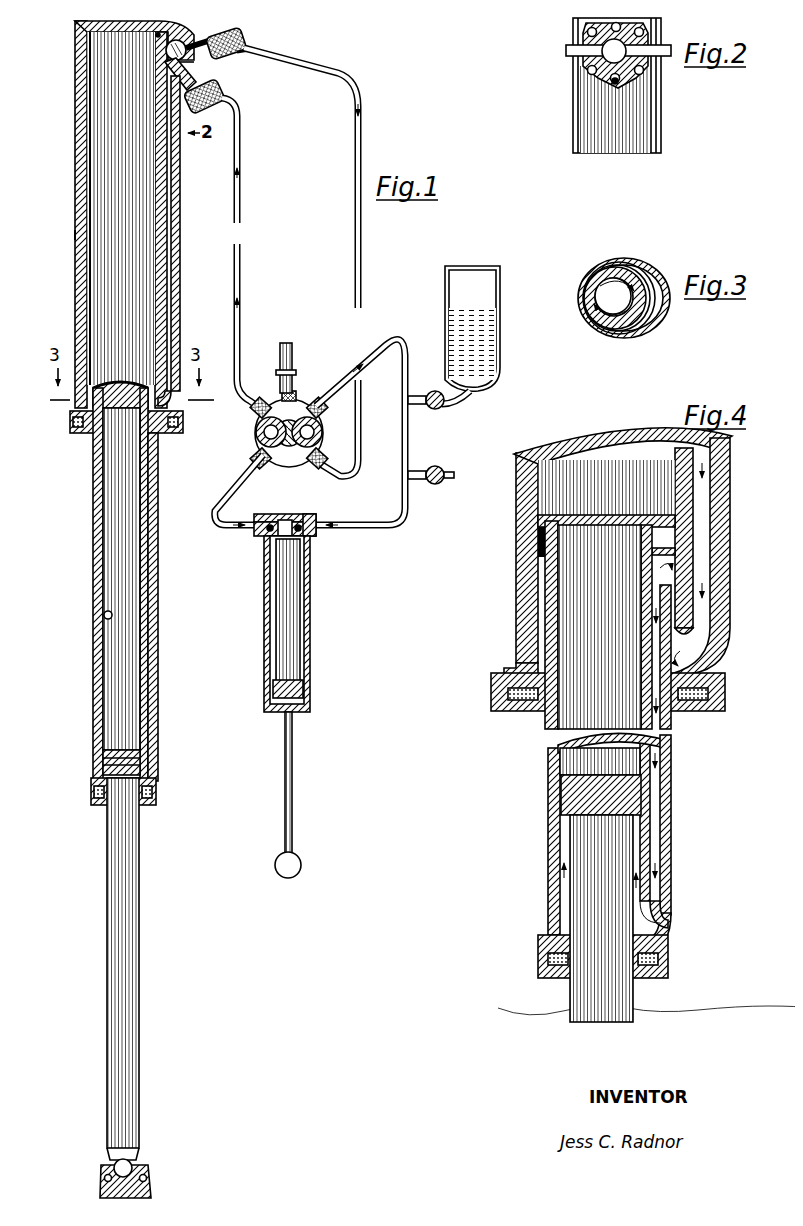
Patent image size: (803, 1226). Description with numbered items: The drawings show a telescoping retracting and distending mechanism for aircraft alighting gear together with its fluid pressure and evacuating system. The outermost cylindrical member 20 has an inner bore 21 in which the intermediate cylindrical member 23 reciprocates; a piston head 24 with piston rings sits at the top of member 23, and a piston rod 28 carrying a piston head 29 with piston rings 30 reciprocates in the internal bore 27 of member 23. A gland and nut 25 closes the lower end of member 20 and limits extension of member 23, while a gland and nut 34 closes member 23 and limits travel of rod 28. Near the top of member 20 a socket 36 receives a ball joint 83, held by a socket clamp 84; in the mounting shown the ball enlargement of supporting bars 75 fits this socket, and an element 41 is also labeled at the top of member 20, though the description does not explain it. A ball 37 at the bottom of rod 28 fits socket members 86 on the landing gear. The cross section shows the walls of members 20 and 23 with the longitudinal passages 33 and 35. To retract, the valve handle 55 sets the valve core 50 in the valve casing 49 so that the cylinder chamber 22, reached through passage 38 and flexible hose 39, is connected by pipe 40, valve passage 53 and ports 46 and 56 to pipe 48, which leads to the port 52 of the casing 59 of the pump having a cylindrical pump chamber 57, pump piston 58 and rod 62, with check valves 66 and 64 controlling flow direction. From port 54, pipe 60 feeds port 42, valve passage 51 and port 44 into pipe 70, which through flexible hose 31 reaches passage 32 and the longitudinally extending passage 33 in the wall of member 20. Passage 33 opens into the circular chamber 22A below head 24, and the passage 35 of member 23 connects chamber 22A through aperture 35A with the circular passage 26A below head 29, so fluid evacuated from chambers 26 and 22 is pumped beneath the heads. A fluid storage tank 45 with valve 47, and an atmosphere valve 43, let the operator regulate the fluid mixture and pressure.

In FIG. 1, the outermost cylindrical member 20 is at (74, 181).
In FIG. 2, the outermost cylindrical member 20 is at (638, 125).
In FIG. 3, the outermost cylindrical member 20 is at (592, 322).
In FIG. 4, the outermost cylindrical member 20 is at (520, 579).
In FIG. 1, the inner bore 21 is at (79, 220).
In FIG. 1, the cylinder chamber 22 is at (112, 136).
In FIG. 4, the circular chamber 22A is at (676, 640).
In FIG. 1, the intermediate cylindrical member 23 is at (88, 491).
In FIG. 3, the intermediate cylindrical member 23 is at (582, 303).
In FIG. 4, the intermediate cylindrical member 23 is at (545, 623).
In FIG. 1, the piston head 24 is at (105, 376).
In FIG. 4, the piston head 24 is at (578, 503).
In FIG. 1, the gland and nut 25 is at (66, 420).
In FIG. 4, the gland and nut 25 is at (697, 702).
In FIG. 1, the cylinder chamber 26 is at (120, 546).
In FIG. 3, the cylinder chamber 26 is at (600, 285).
In FIG. 4, the cylinder chamber 26 is at (590, 699).
In FIG. 4, the circular passage 26A is at (640, 916).
In FIG. 1, the internal bore 27 is at (97, 605).
In FIG. 1, the piston rod 28 is at (114, 870).
In FIG. 4, the piston rod 28 is at (566, 978).
In FIG. 1, the piston head 29 is at (100, 745).
In FIG. 4, the piston head 29 is at (575, 750).
In FIG. 4, the piston rings 30 is at (555, 791).
In FIG. 1, the flexible hose 31 is at (214, 86).
In FIG. 1, the passage 32 is at (182, 86).
In FIG. 2, the passage 32 is at (615, 72).
In FIG. 1, the longitudinally extending passage 33 is at (165, 188).
In FIG. 3, the longitudinally extending passage 33 is at (646, 302).
In FIG. 4, the longitudinally extending passage 33 is at (688, 504).
In FIG. 1, the gland and nut 34 is at (90, 797).
In FIG. 4, the gland and nut 34 is at (658, 967).
In FIG. 1, the longitudinally extending passage 35 is at (142, 490).
In FIG. 3, the longitudinally extending passage 35 is at (626, 310).
In FIG. 4, the longitudinally extending passage 35 is at (652, 738).
In FIG. 4, the aperture 35A is at (655, 588).
In FIG. 1, the socket 36 is at (192, 60).
In FIG. 1, the ball 37 is at (126, 1156).
In FIG. 4, the ball 37 is at (537, 508).
In FIG. 1, the passage 38 is at (214, 17).
In FIG. 2, the passage 38 is at (652, 12).
In FIG. 1, the flexible hose 39 is at (233, 46).
In FIG. 1, the pipe 40 is at (288, 56).
In FIG. 1, the vent 41 is at (149, 28).
In FIG. 1, the valve port 42 is at (250, 434).
In FIG. 1, the valve 43 is at (434, 459).
In FIG. 1, the valve port 44 is at (250, 418).
In FIG. 1, the fluid storage tank 45 is at (493, 291).
In FIG. 1, the valve port 46 is at (283, 392).
In FIG. 1, the valve 47 is at (434, 397).
In FIG. 1, the pipe 48 is at (382, 335).
In FIG. 1, the valve casing 49 is at (310, 418).
In FIG. 1, the valve core 50 is at (280, 456).
In FIG. 1, the valve passage 51 is at (262, 455).
In FIG. 1, the port 52 is at (299, 529).
In FIG. 1, the valve passage 53 is at (296, 455).
In FIG. 1, the port 54 is at (258, 509).
In FIG. 1, the valve handle 55 is at (285, 340).
In FIG. 1, the port 56 is at (306, 436).
In FIG. 1, the cylindrical pump chamber 57 is at (284, 598).
In FIG. 1, the pump piston 58 is at (300, 680).
In FIG. 1, the casing 59 is at (309, 527).
In FIG. 1, the pipe 60 is at (210, 510).
In FIG. 1, the rod 62 is at (286, 762).
In FIG. 1, the check valve 64 is at (263, 515).
In FIG. 1, the check valve 66 is at (292, 515).
In FIG. 1, the pipe 70 is at (233, 148).
In FIG. 2, the supporting bars 75 is at (577, 39).
In FIG. 2, the ball joint 83 is at (580, 47).
In FIG. 1, the socket clamp 84 is at (180, 48).
In FIG. 1, the socket members 86 is at (143, 1176).